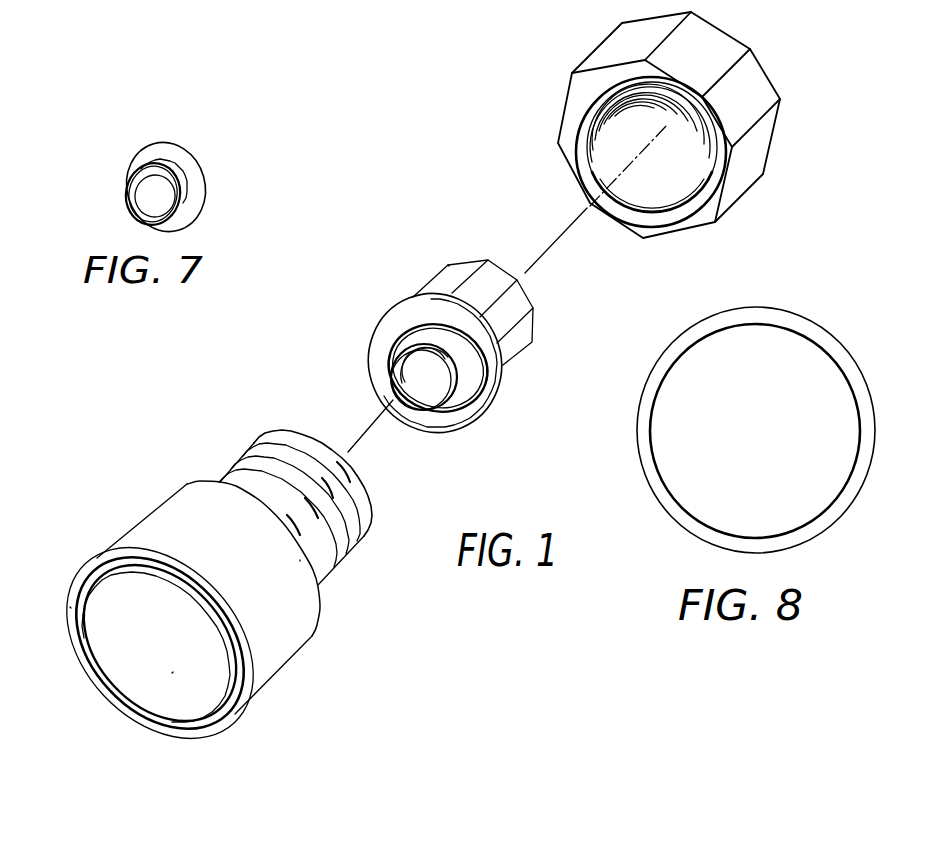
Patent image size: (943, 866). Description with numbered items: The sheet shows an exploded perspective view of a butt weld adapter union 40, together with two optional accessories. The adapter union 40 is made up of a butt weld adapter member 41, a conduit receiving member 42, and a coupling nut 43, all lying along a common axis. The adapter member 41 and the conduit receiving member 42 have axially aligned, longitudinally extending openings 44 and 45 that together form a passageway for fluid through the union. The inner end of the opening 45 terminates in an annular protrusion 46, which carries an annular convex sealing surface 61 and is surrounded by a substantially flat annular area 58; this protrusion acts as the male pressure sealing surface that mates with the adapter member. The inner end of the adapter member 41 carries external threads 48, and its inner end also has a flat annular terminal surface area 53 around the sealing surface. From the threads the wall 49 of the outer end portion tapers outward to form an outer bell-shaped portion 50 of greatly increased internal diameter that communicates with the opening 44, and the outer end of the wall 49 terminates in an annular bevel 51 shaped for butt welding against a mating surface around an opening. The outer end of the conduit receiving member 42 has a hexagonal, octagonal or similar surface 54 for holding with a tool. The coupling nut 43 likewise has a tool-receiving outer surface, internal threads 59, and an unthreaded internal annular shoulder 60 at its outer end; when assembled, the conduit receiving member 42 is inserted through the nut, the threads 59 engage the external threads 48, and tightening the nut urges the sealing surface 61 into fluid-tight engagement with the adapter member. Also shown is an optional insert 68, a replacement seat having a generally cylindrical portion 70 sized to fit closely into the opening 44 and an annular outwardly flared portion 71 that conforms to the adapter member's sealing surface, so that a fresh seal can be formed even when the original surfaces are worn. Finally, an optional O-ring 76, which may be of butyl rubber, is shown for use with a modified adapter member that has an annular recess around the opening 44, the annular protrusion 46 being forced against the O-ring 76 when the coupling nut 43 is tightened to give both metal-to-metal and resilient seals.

In FIG. 1, the adapter union 40 is at (447, 210).
In FIG. 1, the butt weld adapter member 41 is at (228, 577).
In FIG. 1, the conduit receiving member 42 is at (518, 348).
In FIG. 1, the coupling nut 43 is at (729, 109).
In FIG. 1, the opening 44 is at (175, 673).
In FIG. 1, the opening 45 is at (428, 393).
In FIG. 1, the annular protrusion 46 is at (458, 400).
In FIG. 1, the external threads 48 is at (343, 538).
In FIG. 1, the wall 49 is at (298, 638).
In FIG. 1, the outer bell-shaped portion 50 is at (139, 642).
In FIG. 1, the annular bevel 51 is at (233, 722).
In FIG. 1, the flat annular terminal surface area 53 is at (85, 655).
In FIG. 1, the hexagonal or octagonal surface 54 is at (447, 280).
In FIG. 1, the flat annular area 58 is at (378, 343).
In FIG. 1, the internal threads 59 is at (663, 200).
In FIG. 1, the internal annular shoulder 60 is at (680, 137).
In FIG. 1, the annular convex sealing surface 61 is at (395, 345).
In FIG. 7, the insert 68 is at (198, 200).
In FIG. 7, the cylindrical portion 70 is at (150, 225).
In FIG. 7, the annular outwardly flared portion 71 is at (165, 155).
In FIG. 8, the O-ring 76 is at (645, 475).